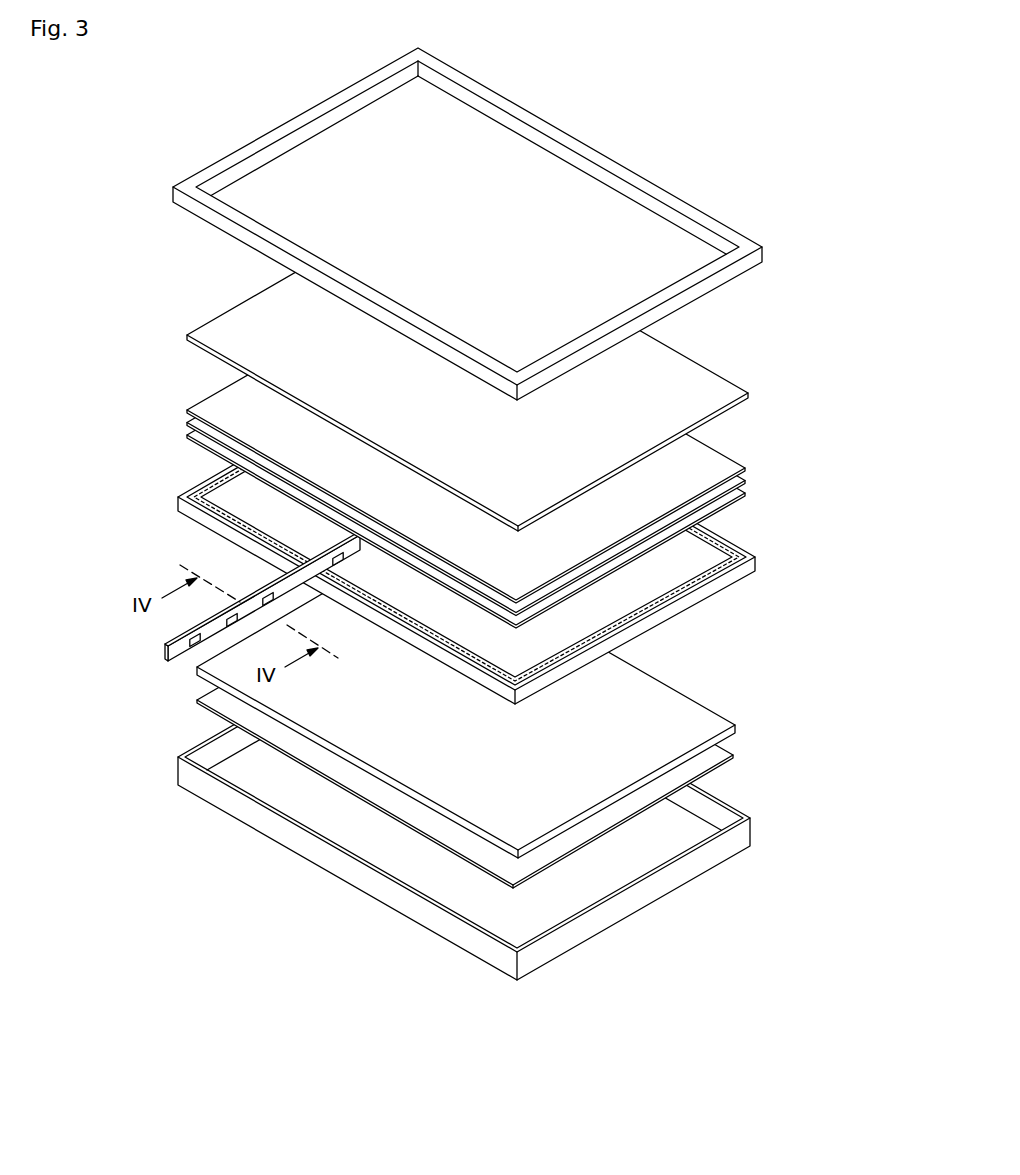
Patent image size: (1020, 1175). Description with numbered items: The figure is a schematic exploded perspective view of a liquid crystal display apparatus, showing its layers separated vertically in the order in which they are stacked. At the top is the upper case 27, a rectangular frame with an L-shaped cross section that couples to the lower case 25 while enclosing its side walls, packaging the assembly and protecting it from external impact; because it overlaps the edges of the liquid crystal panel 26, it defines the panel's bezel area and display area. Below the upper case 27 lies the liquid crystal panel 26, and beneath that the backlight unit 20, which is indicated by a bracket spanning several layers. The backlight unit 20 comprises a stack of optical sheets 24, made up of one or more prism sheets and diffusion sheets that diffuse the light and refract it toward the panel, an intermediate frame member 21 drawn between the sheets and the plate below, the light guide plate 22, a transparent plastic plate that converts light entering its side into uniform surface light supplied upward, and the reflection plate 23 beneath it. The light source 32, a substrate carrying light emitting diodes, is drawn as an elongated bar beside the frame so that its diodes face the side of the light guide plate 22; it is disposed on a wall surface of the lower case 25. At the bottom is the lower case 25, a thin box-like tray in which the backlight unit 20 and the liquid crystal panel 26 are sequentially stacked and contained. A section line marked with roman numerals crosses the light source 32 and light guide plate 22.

The backlight unit 20 is at (836, 757).
The mold frame 21 is at (757, 559).
The light guide plate 22 is at (682, 710).
The reflection plate 23 is at (717, 758).
The optical sheets 24 is at (757, 460).
The lower case 25 is at (745, 833).
The liquid crystal panel 26 is at (750, 394).
The upper case 27 is at (764, 250).
The light source 32 is at (163, 648).